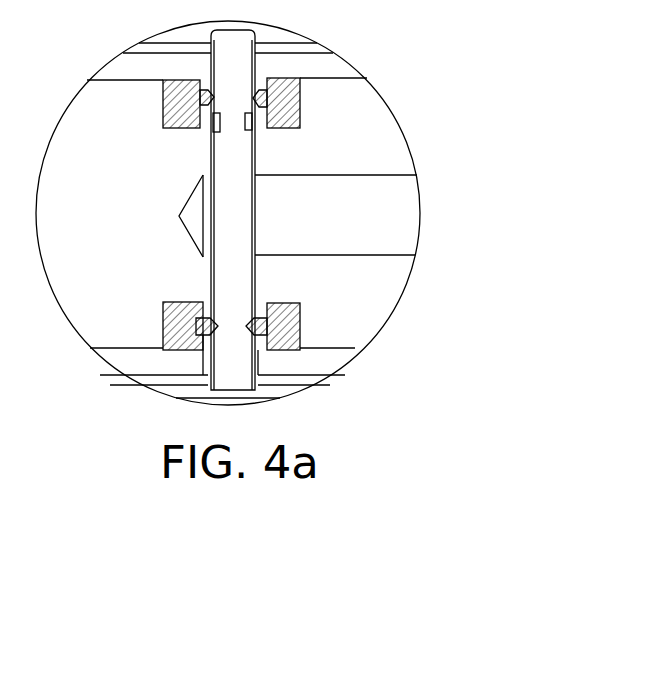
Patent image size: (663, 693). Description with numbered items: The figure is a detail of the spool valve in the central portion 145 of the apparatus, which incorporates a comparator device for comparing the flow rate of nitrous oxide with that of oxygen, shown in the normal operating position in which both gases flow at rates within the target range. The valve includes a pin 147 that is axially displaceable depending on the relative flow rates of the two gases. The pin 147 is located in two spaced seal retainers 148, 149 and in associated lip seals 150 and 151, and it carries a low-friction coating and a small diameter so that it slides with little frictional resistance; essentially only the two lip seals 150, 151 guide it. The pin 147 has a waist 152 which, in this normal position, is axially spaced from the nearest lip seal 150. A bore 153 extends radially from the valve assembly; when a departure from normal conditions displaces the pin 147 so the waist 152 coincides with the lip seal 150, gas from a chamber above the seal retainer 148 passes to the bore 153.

The central portion 145 is at (403, 283).
The pin 147 is at (252, 241).
The seal retainer 148 is at (342, 66).
The seal retainer 149 is at (333, 365).
The lip seal 150 is at (300, 112).
The lip seal 151 is at (302, 330).
The waist 152 is at (258, 128).
The bore 153 is at (415, 198).